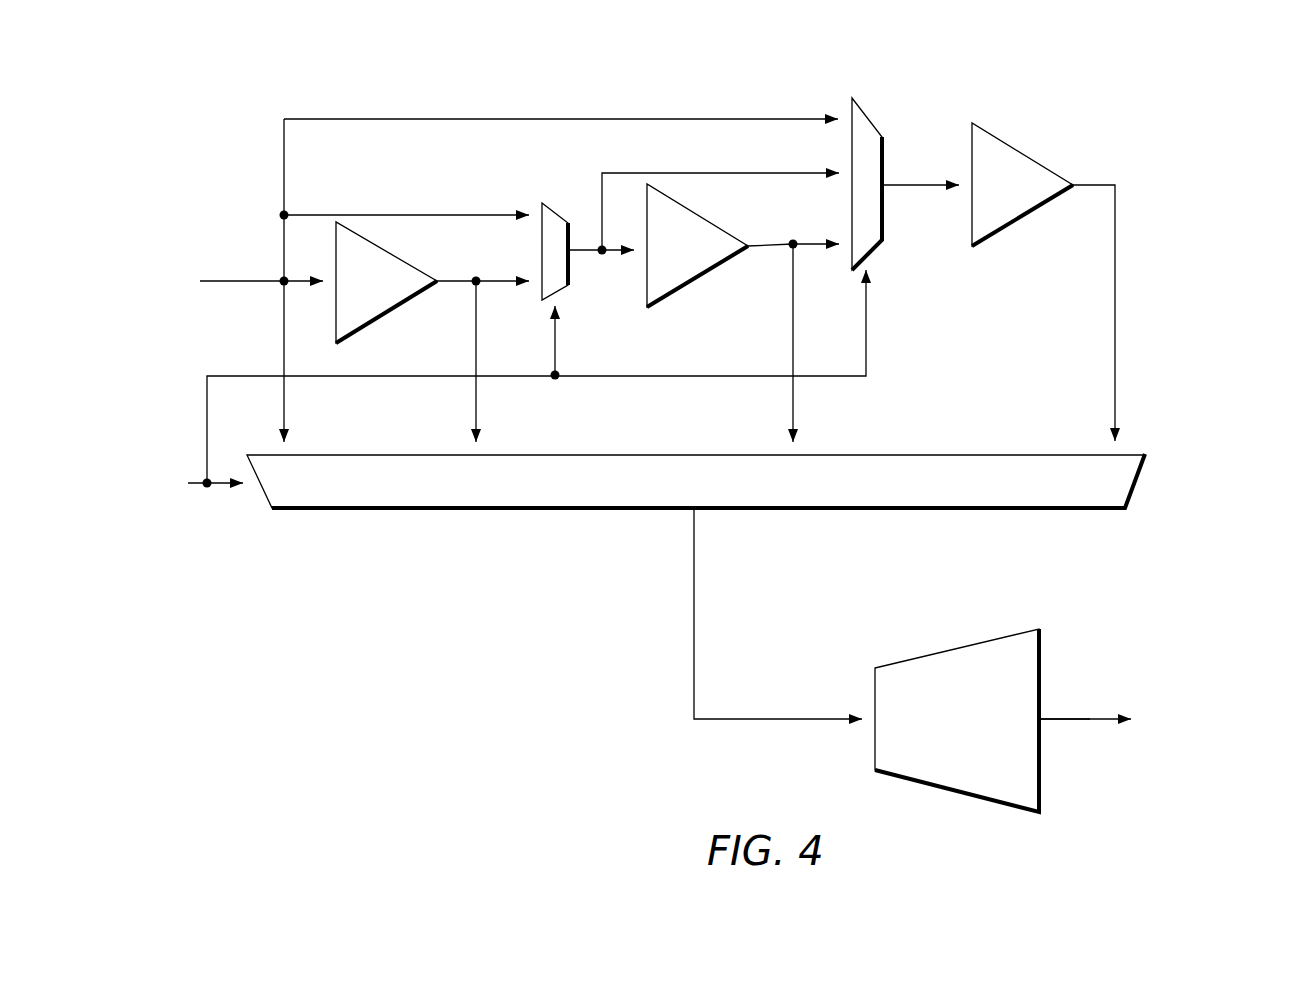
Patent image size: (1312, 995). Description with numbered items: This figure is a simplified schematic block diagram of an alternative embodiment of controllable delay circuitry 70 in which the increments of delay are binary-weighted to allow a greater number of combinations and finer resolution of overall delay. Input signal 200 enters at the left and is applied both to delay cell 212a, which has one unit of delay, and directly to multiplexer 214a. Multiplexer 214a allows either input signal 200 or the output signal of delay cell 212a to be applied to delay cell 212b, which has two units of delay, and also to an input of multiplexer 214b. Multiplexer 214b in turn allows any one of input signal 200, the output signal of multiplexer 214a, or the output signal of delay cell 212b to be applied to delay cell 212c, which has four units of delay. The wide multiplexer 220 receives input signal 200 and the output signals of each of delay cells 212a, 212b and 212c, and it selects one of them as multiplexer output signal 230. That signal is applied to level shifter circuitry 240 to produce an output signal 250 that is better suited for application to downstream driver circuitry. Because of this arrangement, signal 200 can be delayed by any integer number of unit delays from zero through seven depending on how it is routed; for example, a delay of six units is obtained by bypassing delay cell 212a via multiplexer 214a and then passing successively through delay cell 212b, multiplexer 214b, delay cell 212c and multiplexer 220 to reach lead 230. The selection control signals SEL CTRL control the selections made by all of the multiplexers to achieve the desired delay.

The controllable delay circuitry 70 is at (210, 94).
The input signal 200 is at (242, 281).
The delay cell 212a is at (398, 262).
The delay cell 212b is at (720, 222).
The delay cell 212c is at (1028, 153).
The multiplexer 214a is at (557, 213).
The multiplexer 214b is at (868, 112).
The multiplexer 220 is at (1141, 474).
The multiplexer output signal 230 is at (691, 623).
The level shifter circuitry 240 is at (941, 652).
The output signal 250 is at (1076, 717).